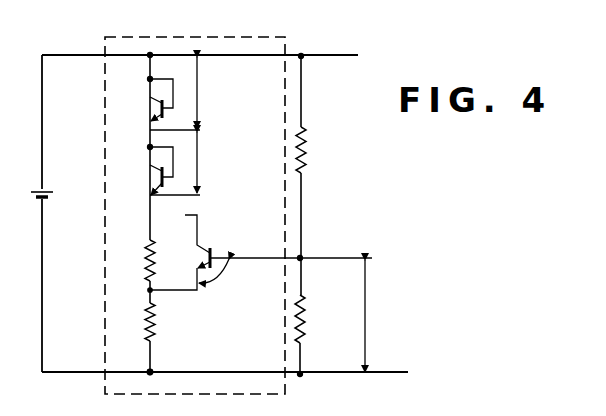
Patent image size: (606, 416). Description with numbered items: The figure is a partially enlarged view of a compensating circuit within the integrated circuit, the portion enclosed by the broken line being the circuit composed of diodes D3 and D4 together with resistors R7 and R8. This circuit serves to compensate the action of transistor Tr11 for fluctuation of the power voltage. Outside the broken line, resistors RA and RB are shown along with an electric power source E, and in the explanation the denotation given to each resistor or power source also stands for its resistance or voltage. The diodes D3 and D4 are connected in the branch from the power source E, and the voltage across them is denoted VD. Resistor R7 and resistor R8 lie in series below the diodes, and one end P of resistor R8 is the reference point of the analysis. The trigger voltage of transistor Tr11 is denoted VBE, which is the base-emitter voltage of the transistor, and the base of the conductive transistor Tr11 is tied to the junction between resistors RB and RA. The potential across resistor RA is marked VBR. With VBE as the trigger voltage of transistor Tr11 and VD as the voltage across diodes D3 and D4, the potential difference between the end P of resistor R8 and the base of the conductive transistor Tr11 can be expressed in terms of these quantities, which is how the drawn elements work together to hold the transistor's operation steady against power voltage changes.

The electric power source E is at (40, 190).
The diode D3 is at (160, 110).
The diode D4 is at (160, 186).
The voltage across diodes VD is at (178, 126).
The resistor R7 is at (146, 251).
The resistor R8 is at (147, 311).
The one end of resistor R8 P is at (151, 371).
The transistor Tr11 is at (221, 240).
The trigger voltage of transistor Tr11 VBE is at (215, 275).
The resistor RB is at (320, 165).
The resistor RA is at (304, 312).
The voltage across RA VBR is at (339, 315).